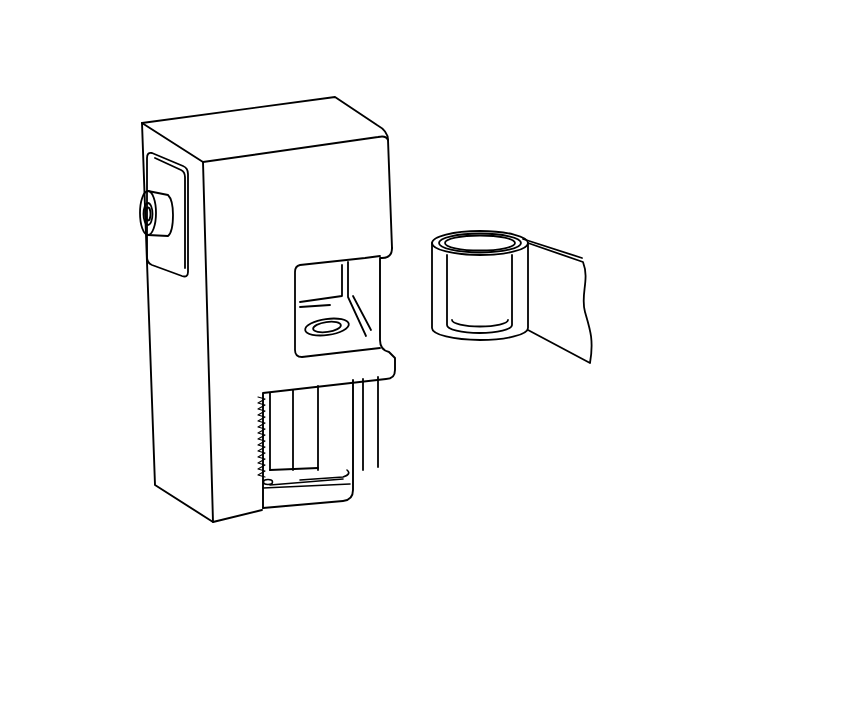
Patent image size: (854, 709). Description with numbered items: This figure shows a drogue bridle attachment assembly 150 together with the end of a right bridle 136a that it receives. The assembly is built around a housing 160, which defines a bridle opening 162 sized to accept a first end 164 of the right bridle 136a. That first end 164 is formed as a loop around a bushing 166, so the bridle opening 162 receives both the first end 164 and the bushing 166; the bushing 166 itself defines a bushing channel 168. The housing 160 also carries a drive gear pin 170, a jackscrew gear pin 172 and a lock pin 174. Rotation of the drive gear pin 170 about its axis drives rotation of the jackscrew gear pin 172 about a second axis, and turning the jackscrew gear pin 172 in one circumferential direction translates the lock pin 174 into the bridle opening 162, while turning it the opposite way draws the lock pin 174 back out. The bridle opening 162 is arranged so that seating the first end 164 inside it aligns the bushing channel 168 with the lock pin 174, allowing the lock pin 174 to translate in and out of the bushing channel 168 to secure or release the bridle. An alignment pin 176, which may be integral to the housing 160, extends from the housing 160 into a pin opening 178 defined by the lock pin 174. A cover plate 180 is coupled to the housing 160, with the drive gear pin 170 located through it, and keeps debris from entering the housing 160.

The drogue bridle attachment assembly 150 is at (369, 86).
The housing 160 is at (295, 226).
The bridle opening 162 is at (357, 261).
The first end 164 is at (476, 201).
The bushing 166 is at (485, 300).
The bushing channel 168 is at (495, 241).
The drive gear pin 170 is at (121, 240).
The jackscrew gear pin 172 is at (260, 450).
The lock pin 174 is at (333, 457).
The alignment pin 176 is at (287, 468).
The pin opening 178 is at (316, 491).
The cover plate 180 is at (160, 172).
The right bridle 136a is at (560, 322).